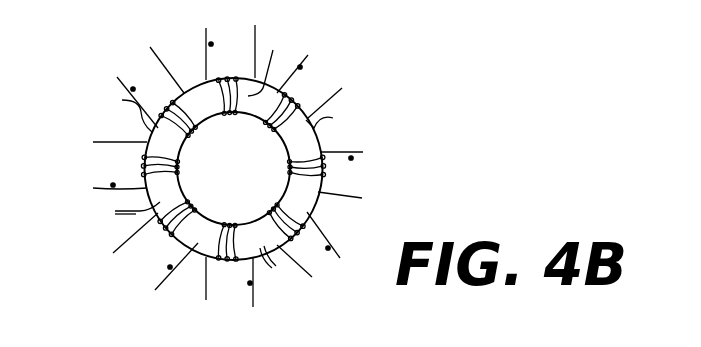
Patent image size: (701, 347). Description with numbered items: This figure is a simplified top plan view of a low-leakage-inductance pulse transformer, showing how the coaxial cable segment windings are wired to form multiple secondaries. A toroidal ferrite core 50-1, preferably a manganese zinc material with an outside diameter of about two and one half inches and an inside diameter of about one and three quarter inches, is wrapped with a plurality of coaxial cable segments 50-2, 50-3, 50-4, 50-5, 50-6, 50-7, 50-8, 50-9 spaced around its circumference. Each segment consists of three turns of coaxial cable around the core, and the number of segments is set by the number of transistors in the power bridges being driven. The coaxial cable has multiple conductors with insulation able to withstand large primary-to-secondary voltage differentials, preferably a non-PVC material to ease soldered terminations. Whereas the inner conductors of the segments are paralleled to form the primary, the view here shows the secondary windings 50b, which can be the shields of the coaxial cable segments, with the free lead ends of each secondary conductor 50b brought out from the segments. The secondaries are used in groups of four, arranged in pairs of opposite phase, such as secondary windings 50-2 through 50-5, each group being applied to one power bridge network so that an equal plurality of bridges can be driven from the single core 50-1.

The toroidal ferrite core 50-1 is at (212, 224).
The coaxial cable segment winding 50-2 is at (108, 142).
The coaxial cable segment winding 50-3 is at (157, 52).
The coaxial cable segment winding 50-4 is at (257, 32).
The coaxial cable segment winding 50-5 is at (341, 88).
The coaxial cable segment winding 50-6 is at (350, 198).
The coaxial cable segment winding 50-7 is at (312, 277).
The coaxial cable segment winding 50-8 is at (206, 298).
The coaxial cable segment winding 50-9 is at (125, 240).
The secondary winding conductor 50b is at (224, 165).